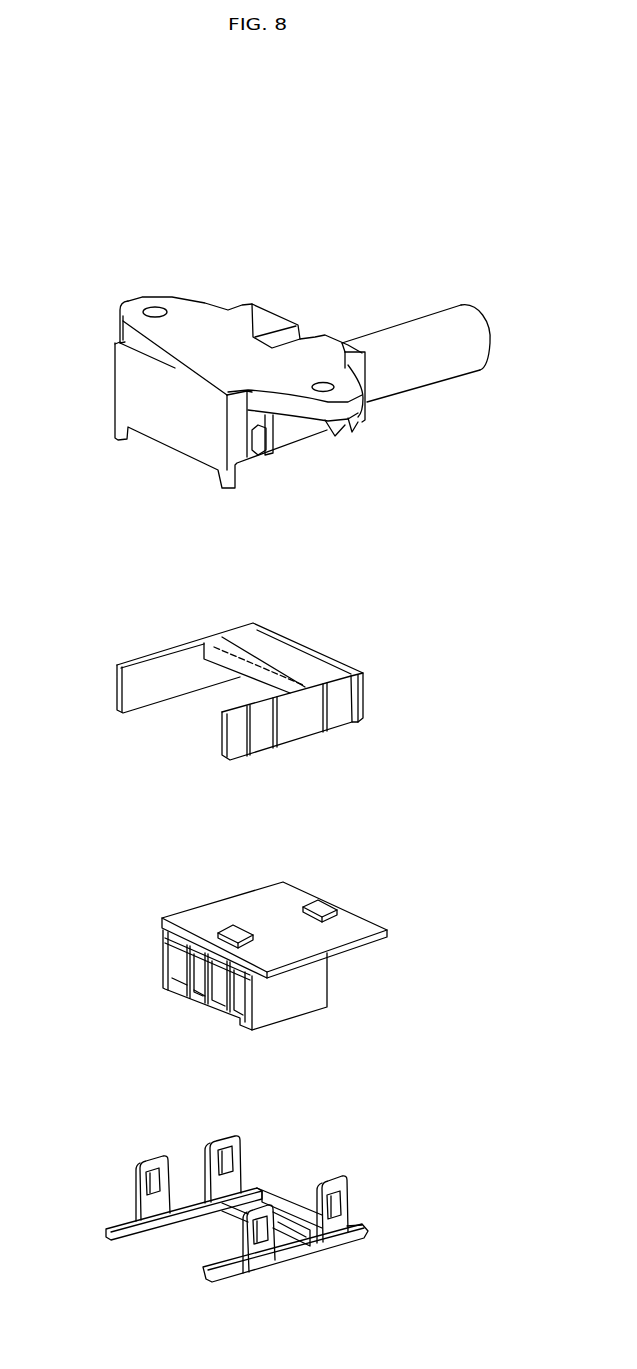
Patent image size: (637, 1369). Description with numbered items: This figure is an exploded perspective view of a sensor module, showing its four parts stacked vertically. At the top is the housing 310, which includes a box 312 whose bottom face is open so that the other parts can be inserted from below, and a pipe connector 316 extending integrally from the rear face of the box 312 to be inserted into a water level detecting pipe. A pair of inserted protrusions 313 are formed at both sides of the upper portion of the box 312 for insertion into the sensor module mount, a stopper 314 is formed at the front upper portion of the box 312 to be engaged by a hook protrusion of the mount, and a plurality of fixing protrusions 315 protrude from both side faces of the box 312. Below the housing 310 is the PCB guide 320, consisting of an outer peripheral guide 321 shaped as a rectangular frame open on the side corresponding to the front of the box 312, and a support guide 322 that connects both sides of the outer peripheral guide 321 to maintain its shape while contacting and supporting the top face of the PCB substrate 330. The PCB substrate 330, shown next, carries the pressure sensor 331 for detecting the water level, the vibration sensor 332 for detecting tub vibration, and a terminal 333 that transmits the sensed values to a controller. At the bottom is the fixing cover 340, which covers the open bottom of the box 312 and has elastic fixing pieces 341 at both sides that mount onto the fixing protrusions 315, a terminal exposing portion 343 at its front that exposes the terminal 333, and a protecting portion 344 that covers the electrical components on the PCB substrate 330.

The housing 310 is at (80, 287).
The box 312 is at (127, 408).
The inserted protrusions 313 is at (132, 300).
The stopper 314 is at (170, 368).
The fixing protrusions 315 is at (258, 455).
The pipe connector 316 is at (387, 337).
The PCB guide 320 is at (123, 660).
The outer peripheral guide 321 is at (303, 720).
The support guide 322 is at (230, 655).
The PCB substrate 330 is at (168, 907).
The pressure sensor 331 is at (327, 903).
The vibration sensor 332 is at (228, 930).
The terminal 333 is at (298, 987).
The fixing cover 340 is at (105, 1217).
The elastic fixing pieces 341 is at (165, 1160).
The terminal exposing portion 343 is at (178, 1252).
The protecting portion 344 is at (295, 1230).